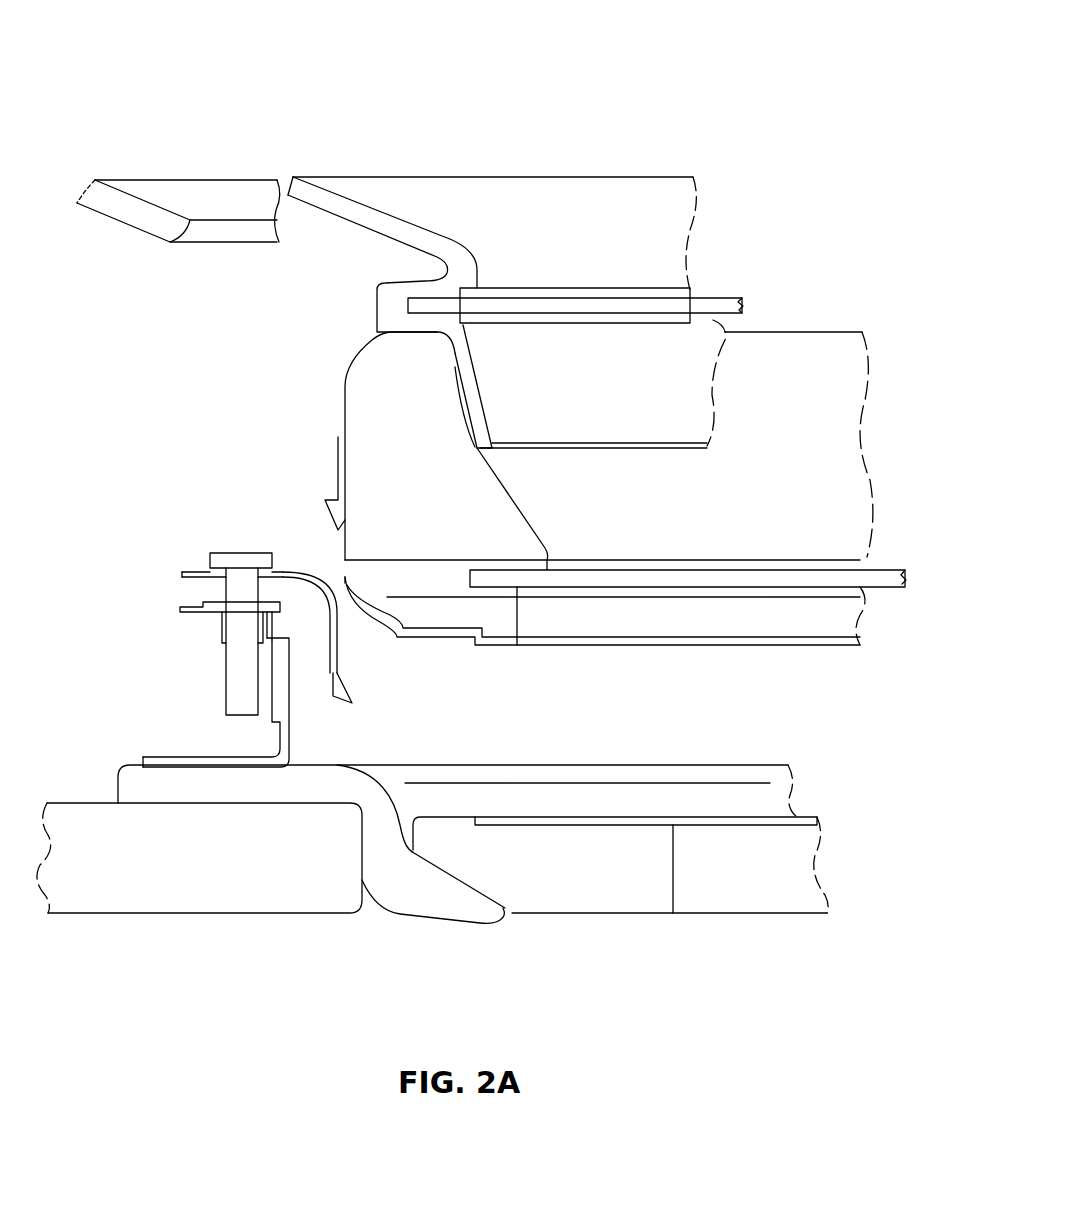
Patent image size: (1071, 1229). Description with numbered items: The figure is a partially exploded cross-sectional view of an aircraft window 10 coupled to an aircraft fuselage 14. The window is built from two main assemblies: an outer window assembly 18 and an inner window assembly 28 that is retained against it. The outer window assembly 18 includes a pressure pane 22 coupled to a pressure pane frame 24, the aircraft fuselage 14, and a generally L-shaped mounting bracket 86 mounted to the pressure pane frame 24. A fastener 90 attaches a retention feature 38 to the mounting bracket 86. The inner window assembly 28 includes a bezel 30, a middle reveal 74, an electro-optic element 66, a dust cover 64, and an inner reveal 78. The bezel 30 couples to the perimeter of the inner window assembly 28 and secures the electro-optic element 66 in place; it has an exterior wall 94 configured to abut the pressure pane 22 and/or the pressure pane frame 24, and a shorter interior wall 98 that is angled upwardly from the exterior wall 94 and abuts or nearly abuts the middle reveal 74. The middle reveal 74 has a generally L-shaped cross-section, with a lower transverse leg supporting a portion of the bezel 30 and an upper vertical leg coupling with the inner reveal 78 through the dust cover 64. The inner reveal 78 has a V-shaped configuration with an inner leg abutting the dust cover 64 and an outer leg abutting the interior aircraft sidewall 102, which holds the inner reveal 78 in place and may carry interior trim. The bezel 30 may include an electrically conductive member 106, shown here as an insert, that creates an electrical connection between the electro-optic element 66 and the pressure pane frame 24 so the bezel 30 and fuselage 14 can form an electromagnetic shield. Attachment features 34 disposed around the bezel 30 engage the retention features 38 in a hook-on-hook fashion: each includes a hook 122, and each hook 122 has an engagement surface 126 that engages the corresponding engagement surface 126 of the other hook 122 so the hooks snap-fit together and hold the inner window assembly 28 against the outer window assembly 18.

The aircraft window 10 is at (150, 98).
The aircraft fuselage 14 is at (187, 883).
The outer window assembly 18 is at (133, 581).
The pressure pane 22 is at (587, 882).
The pressure pane frame 24 is at (400, 882).
The inner window assembly 28 is at (263, 299).
The bezel 30 is at (382, 372).
The attachment features 34 is at (302, 505).
The retention features 38 is at (372, 673).
The dust cover 64 is at (712, 296).
The electro-optic element 66 is at (882, 567).
The middle reveal 74 is at (482, 400).
The inner reveal 78 is at (368, 217).
The mounting brackets 86 is at (178, 757).
The fastener 90 is at (222, 550).
The exterior wall 94 is at (700, 645).
The interior wall 98 is at (803, 330).
The interior aircraft sidewall 102 is at (140, 210).
The electrically conductive member 106 is at (433, 572).
The hook 122 is at (318, 515).
The engagement surface 126 is at (335, 505).